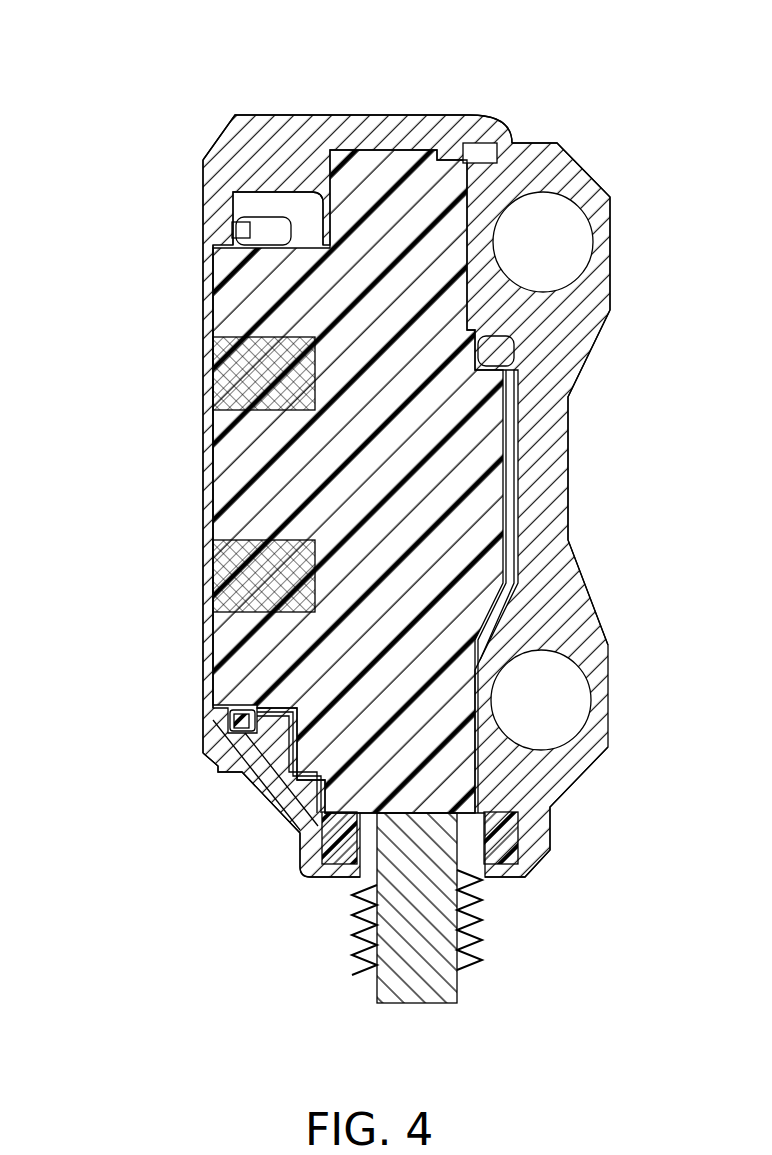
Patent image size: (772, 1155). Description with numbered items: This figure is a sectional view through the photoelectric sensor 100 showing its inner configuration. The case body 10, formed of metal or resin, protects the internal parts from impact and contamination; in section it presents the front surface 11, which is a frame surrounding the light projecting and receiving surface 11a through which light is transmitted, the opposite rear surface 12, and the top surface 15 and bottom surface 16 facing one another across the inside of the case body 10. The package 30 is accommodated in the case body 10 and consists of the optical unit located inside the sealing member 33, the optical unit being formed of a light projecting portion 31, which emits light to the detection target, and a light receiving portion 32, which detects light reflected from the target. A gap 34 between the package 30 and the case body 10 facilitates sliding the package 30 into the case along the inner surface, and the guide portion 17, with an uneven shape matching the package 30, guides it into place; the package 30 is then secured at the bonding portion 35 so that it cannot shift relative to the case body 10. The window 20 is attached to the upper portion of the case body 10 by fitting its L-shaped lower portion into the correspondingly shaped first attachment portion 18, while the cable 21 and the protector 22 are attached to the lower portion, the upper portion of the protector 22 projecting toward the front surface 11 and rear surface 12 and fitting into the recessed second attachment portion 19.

The photoelectric sensor 100 is at (757, 39).
The case body 10 is at (621, 163).
The front surface 11 is at (205, 740).
The light projecting and receiving surface 11a is at (207, 284).
The rear surface 12 is at (572, 425).
The top surface 15 is at (497, 143).
The bottom surface 16 is at (520, 878).
The guide portion 17 is at (215, 247).
The first attachment portion 18 is at (300, 190).
The second attachment portion 19 is at (330, 842).
The window 20 is at (258, 118).
The cable 21 is at (383, 990).
The protector 22 is at (362, 920).
The package 30 is at (73, 330).
The light projecting portion 31 is at (255, 577).
The light receiving portion 32 is at (260, 370).
The sealing member 33 is at (255, 480).
The gap 34 is at (320, 765).
The bonding portion 35 is at (225, 226).